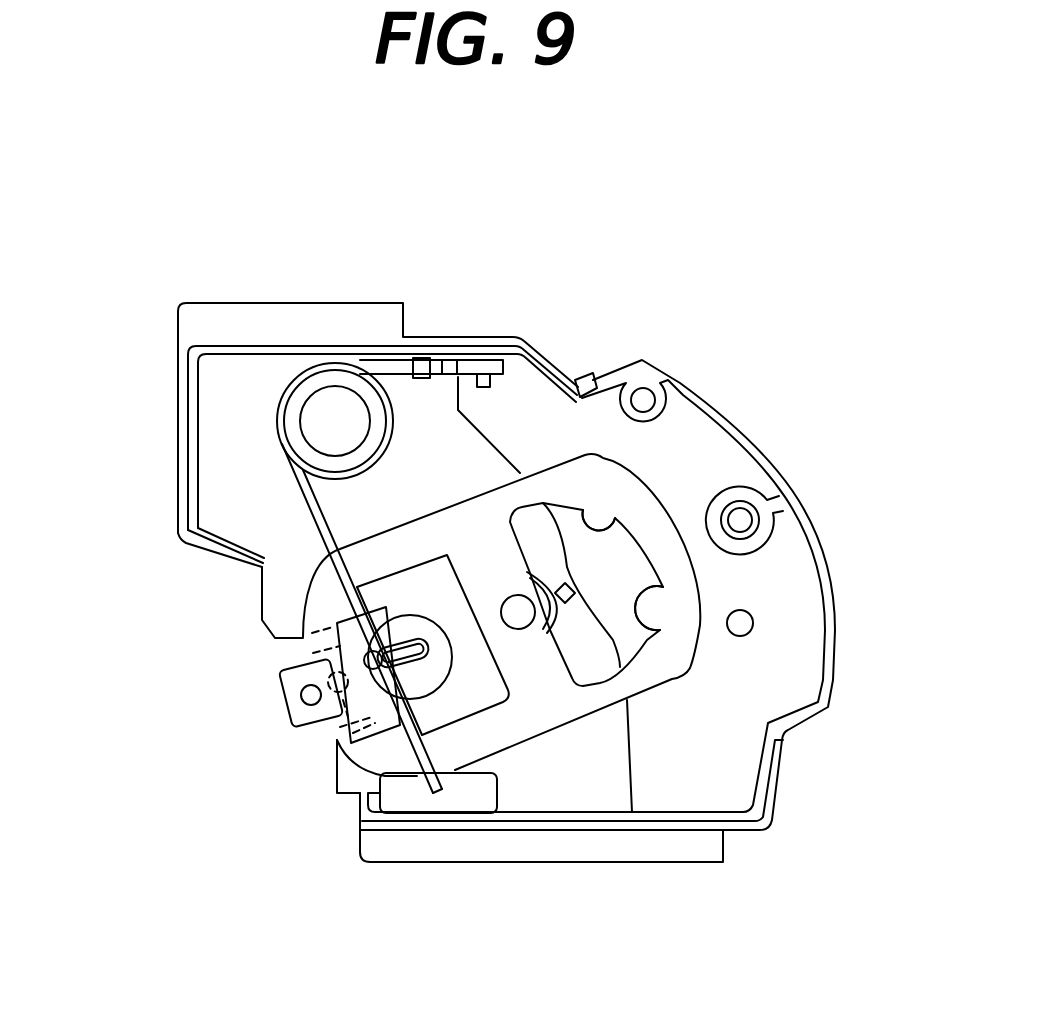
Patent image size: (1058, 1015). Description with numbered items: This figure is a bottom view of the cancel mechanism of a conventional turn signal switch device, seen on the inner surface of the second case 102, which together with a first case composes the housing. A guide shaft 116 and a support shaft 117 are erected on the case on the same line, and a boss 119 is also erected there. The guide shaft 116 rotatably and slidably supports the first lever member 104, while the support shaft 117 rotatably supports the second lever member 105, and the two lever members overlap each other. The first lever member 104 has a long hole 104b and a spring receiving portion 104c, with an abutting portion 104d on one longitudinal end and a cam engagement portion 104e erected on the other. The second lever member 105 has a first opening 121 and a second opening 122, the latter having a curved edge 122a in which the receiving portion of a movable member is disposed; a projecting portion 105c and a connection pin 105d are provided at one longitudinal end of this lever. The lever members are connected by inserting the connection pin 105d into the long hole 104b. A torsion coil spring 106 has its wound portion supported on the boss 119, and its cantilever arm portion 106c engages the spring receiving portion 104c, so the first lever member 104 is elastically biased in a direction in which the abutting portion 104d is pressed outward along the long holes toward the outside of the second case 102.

The second case 102 is at (177, 390).
The first lever member 104 is at (277, 677).
The long hole 104b is at (293, 712).
The spring receiving portion 104c is at (455, 770).
The abutting portion 104d is at (295, 730).
The cam engagement portion 104e is at (428, 612).
The second lever member 105 is at (598, 450).
The projecting portion 105c is at (303, 637).
The connection pin 105d is at (333, 740).
The torsion coil spring 106 is at (277, 427).
The arm portion 106c is at (425, 765).
The guide shaft 116 is at (432, 632).
The support shaft 117 is at (518, 612).
The boss 119 is at (307, 383).
The first opening 121 is at (493, 693).
The second opening 122 is at (628, 550).
The curved edge 122a is at (628, 552).